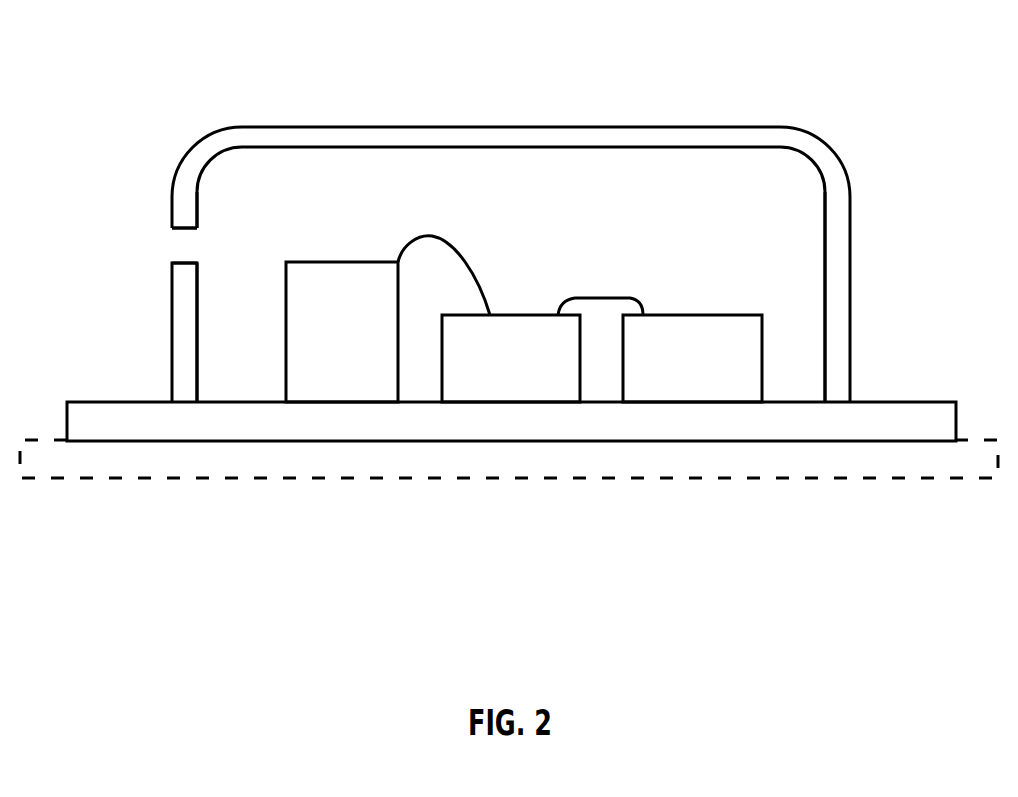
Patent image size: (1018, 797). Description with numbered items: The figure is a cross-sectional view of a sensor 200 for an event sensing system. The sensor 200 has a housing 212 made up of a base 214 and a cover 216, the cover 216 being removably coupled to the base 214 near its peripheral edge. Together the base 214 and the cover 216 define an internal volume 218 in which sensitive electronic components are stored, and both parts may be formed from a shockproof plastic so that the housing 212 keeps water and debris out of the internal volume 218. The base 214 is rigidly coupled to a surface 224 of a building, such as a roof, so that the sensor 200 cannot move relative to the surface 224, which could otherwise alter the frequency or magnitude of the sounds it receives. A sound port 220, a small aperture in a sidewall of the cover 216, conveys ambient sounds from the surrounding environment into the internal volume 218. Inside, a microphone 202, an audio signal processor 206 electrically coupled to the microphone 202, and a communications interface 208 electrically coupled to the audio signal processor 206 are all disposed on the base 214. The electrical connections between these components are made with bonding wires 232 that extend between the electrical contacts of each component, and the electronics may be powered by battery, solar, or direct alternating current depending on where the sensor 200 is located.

The sensor 200 is at (128, 68).
The microphone 202 is at (323, 312).
The audio signal processor 206 is at (491, 346).
The communications interface 208 is at (673, 349).
The housing 212 is at (180, 161).
The base 214 is at (135, 434).
The cover 216 is at (567, 127).
The internal volume 218 is at (296, 192).
The sound port 220 is at (176, 249).
The surface 224 is at (135, 474).
The bonding wires 232 is at (433, 233).